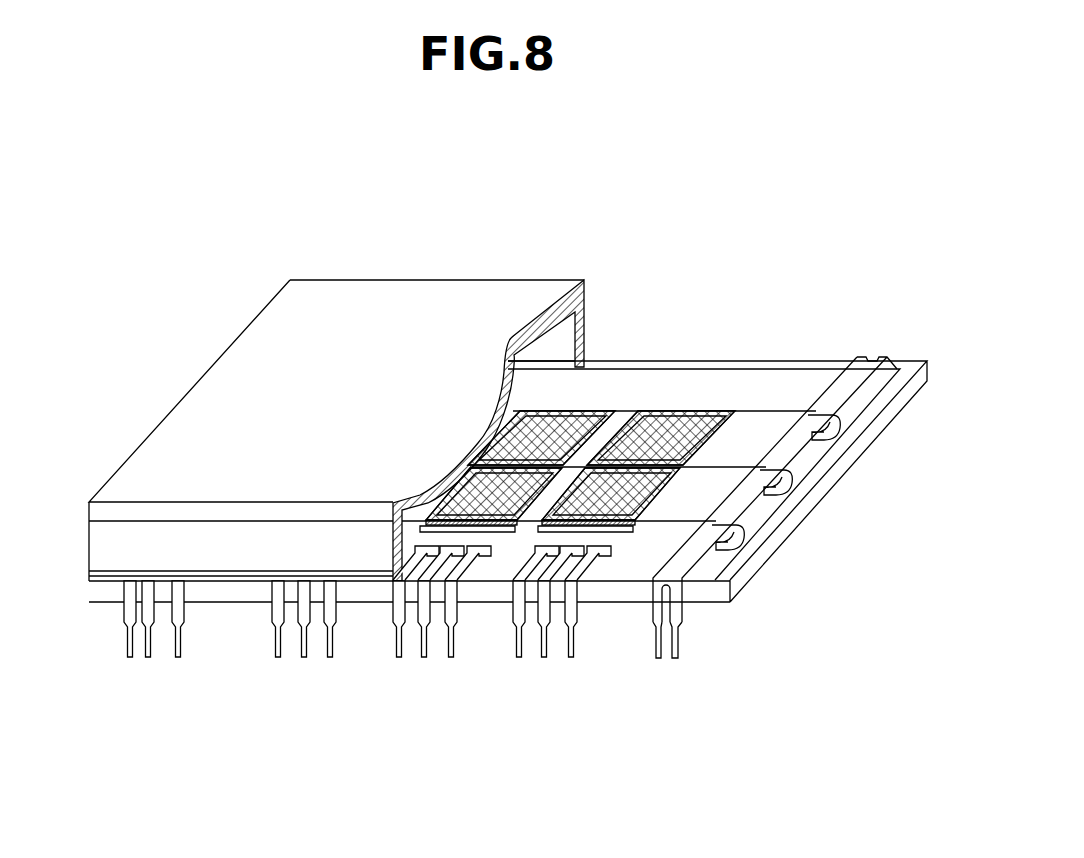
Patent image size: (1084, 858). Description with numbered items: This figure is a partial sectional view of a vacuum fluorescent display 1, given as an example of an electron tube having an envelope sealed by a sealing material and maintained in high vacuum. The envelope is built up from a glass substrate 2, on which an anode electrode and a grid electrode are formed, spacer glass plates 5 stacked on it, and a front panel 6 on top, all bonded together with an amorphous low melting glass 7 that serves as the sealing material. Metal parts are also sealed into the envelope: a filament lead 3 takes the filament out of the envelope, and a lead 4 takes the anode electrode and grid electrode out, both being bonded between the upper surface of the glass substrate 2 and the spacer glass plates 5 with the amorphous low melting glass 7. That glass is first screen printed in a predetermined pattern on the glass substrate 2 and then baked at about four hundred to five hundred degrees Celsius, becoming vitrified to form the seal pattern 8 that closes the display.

The vacuum fluorescent display 1 is at (840, 288).
The glass substrate 2 is at (617, 385).
The filament lead 3 is at (657, 655).
The lead 4 is at (516, 655).
The spacer glass plates 5 is at (95, 557).
The front panel 6 is at (143, 472).
The amorphous low melting glass 7 is at (93, 574).
The seal pattern 8 is at (765, 362).